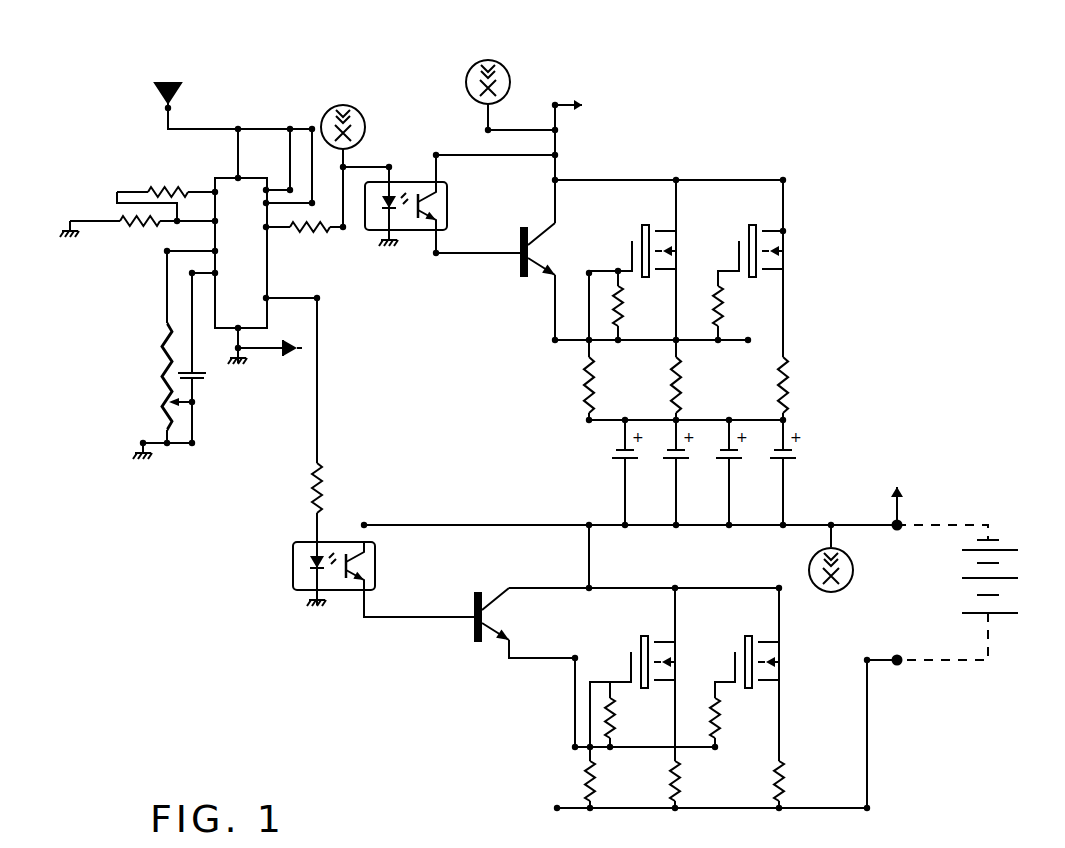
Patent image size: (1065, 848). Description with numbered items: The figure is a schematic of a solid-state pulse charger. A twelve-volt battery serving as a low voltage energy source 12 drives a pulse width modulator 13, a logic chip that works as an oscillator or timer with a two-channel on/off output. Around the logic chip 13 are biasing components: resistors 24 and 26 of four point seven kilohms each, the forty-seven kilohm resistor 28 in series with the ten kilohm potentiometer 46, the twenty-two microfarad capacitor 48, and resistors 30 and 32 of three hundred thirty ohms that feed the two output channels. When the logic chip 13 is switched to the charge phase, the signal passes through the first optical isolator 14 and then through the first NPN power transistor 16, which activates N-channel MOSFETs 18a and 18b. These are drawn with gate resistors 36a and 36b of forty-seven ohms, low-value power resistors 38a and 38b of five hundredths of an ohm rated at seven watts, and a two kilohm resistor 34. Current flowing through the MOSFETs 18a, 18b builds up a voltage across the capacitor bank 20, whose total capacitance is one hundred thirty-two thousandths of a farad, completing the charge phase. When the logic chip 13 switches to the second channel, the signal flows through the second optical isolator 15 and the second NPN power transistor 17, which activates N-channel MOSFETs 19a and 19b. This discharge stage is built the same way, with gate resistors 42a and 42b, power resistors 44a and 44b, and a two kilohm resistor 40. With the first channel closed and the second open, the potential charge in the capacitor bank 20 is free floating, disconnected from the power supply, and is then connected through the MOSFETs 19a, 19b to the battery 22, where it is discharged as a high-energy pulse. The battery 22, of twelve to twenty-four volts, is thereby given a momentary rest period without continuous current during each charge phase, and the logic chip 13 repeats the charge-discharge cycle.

The low voltage energy source 12 is at (164, 72).
The pulse width modulator 13 is at (255, 258).
The first optical isolator 14 is at (447, 208).
The second optical isolator 15 is at (290, 568).
The first NPN power transistor 16 is at (517, 263).
The second NPN power transistor 17 is at (468, 622).
The N-channel MOSFET 18a is at (630, 250).
The N-channel MOSFET 18b is at (728, 254).
The N-channel MOSFET 19a is at (636, 666).
The N-channel MOSFET 19b is at (740, 666).
The capacitor bank 20 is at (748, 484).
The battery 22 is at (1005, 593).
The resistor 24 is at (191, 189).
The resistor 26 is at (158, 227).
The resistor 28 is at (162, 338).
The resistor 30 is at (330, 225).
The resistor 32 is at (324, 488).
The resistor 34 is at (582, 394).
The resistor 36a is at (626, 304).
The resistor 36b is at (744, 304).
The resistor 38a is at (681, 378).
The resistor 38b is at (789, 380).
The resistor 40 is at (585, 763).
The resistor 42a is at (617, 718).
The resistor 42b is at (721, 706).
The resistor 44a is at (681, 772).
The resistor 44b is at (785, 770).
The potentiometer 46 is at (163, 417).
The capacitor 48 is at (208, 386).